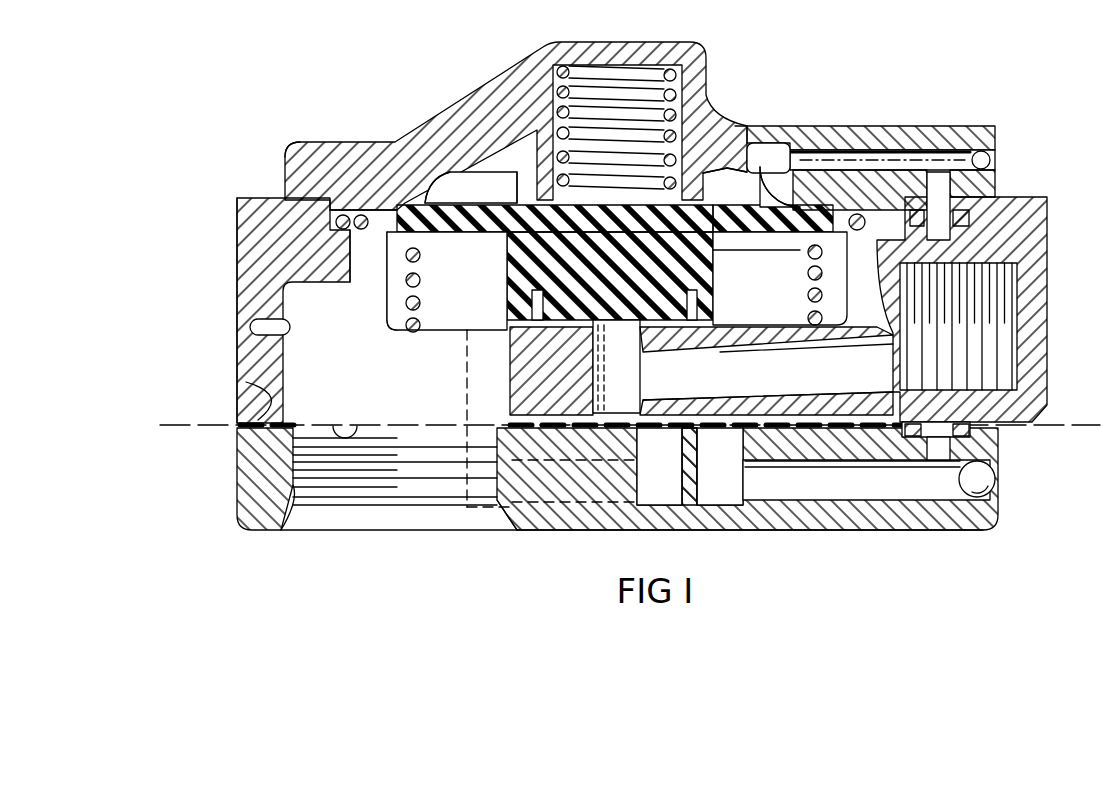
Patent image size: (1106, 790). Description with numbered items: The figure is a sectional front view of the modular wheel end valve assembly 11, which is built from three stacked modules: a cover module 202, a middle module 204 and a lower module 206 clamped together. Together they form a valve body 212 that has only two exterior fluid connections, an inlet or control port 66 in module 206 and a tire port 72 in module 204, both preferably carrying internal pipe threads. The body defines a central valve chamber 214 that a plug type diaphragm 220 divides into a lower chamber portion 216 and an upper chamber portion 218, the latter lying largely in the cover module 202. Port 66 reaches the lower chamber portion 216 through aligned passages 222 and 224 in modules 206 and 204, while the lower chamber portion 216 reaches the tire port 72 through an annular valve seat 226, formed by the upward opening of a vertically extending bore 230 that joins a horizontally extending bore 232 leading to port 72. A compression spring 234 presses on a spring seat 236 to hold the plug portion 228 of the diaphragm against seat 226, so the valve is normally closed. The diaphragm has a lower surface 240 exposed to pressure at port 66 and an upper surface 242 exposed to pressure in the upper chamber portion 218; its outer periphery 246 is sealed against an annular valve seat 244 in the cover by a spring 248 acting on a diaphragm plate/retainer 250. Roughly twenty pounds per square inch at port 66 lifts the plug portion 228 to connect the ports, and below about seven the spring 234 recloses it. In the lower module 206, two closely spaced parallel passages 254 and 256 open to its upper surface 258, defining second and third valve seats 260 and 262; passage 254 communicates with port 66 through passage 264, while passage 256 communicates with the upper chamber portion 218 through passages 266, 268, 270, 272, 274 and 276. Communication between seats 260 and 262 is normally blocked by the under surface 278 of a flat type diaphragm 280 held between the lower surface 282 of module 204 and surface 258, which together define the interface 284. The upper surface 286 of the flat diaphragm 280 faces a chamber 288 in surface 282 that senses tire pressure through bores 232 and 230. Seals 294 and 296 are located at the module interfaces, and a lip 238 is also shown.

The wheel valve assembly 11 is at (420, 75).
The inlet or control port 66 is at (367, 520).
The tire port 72 is at (1033, 384).
The cover module 202 is at (271, 173).
The module 204 is at (241, 245).
The module 206 is at (240, 482).
The valve body 212 is at (238, 284).
The central valve chamber 214 is at (442, 178).
The lower chamber portion 216 is at (367, 262).
The upper chamber portion 218 is at (473, 196).
The plug type diaphragm 220 is at (529, 185).
The passage 222 is at (287, 528).
The passage 224 is at (252, 330).
The annular valve seat 226 is at (518, 327).
The plug portion 228 is at (518, 279).
The vertically extending bore 230 is at (520, 381).
The horizontally extending bore 232 is at (888, 378).
The compression spring 234 is at (640, 68).
The spring seat 236 is at (703, 173).
The lip 238 is at (713, 319).
The lower surface 240 is at (806, 264).
The upper surface 242 is at (748, 213).
The annular valve seat 244 is at (345, 195).
The outer periphery 246 is at (818, 220).
The spring 248 is at (806, 284).
The diaphragm plate/retainer 250 is at (852, 238).
The passage 254 is at (660, 497).
The passage 256 is at (718, 497).
The upper surface 258 is at (858, 415).
The second valve seat 260 is at (657, 430).
The third valve seat 262 is at (745, 485).
The passage 264 is at (530, 507).
The passage 266 is at (830, 493).
The passage 268 is at (947, 452).
The passage 270 is at (1047, 197).
The passage 272 is at (950, 183).
The passage 274 is at (897, 157).
The passage 276 is at (768, 148).
The under surface 278 is at (778, 458).
The flat type diaphragm 280 is at (650, 422).
The lower surface 282 is at (352, 422).
The interface 284 is at (173, 423).
The upper surface 286 is at (600, 437).
The chamber 288 is at (727, 410).
The seal 294 is at (246, 382).
The seal 296 is at (293, 143).